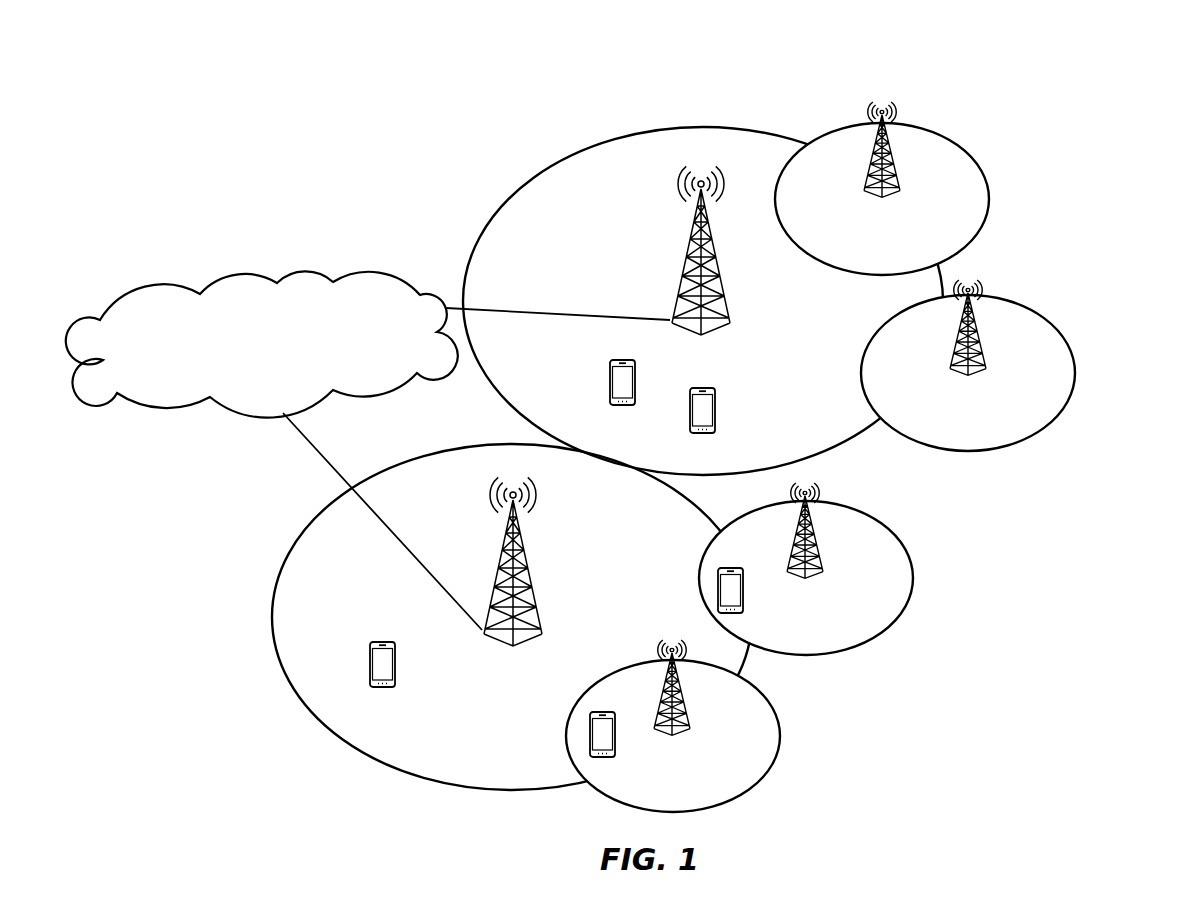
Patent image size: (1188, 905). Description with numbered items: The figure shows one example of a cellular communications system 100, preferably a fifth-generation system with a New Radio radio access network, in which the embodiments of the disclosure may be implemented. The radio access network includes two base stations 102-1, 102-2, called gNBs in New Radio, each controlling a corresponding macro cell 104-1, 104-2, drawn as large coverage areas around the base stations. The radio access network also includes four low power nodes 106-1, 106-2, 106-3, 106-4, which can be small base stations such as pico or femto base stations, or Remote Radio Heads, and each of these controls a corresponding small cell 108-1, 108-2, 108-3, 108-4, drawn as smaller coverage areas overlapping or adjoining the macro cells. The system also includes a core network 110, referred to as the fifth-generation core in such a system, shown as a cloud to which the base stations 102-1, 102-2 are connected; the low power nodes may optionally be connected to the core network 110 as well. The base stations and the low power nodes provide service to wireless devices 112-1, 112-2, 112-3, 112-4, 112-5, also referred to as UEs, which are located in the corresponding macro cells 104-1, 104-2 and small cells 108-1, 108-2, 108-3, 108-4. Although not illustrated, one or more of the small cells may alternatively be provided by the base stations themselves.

The cellular communications system 100 is at (1055, 92).
The base station 102-1 is at (523, 587).
The base station 102-2 is at (683, 277).
The macro cell 104-1 is at (383, 766).
The macro cell 104-2 is at (703, 126).
The low power node 106-1 is at (678, 728).
The low power node 106-2 is at (818, 572).
The low power node 106-3 is at (975, 370).
The low power node 106-4 is at (892, 192).
The small cell 108-1 is at (775, 740).
The small cell 108-2 is at (912, 592).
The small cell 108-3 is at (1075, 382).
The small cell 108-4 is at (988, 190).
The core network 110 is at (245, 384).
The wireless device 112-1 is at (616, 740).
The wireless device 112-2 is at (744, 598).
The wireless device 112-3 is at (396, 662).
The wireless device 112-4 is at (636, 386).
The wireless device 112-5 is at (716, 411).